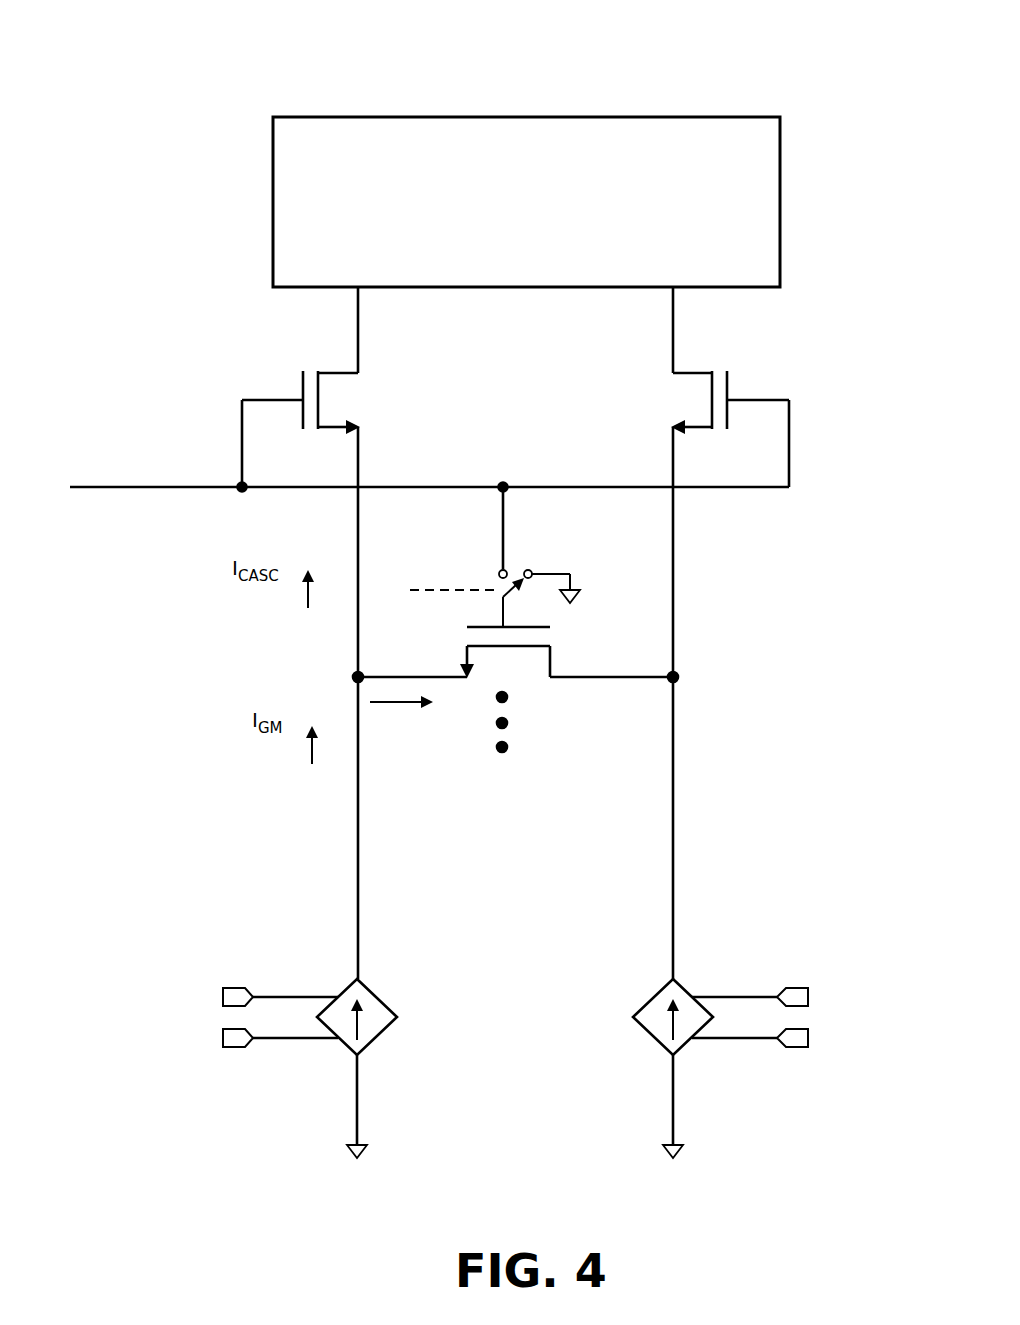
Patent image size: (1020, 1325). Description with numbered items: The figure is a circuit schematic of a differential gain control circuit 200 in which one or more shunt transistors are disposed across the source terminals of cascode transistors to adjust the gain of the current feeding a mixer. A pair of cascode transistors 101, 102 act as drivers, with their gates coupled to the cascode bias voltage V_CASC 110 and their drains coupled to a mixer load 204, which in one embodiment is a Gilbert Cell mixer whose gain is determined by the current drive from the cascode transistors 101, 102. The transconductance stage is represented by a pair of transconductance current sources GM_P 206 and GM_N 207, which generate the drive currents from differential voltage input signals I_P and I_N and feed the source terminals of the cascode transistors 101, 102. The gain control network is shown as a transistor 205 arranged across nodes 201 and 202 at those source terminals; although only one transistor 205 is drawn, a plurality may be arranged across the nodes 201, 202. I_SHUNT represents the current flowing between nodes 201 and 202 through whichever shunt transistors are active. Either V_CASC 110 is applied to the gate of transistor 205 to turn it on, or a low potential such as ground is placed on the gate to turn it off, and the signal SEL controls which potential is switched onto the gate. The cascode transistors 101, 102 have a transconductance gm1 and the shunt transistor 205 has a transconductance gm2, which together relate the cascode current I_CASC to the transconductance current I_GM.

The circuit 200 is at (824, 63).
The mixer load 204 is at (780, 164).
The cascode transistor 101 is at (385, 396).
The cascode transistor 102 is at (683, 396).
The cascode bias voltage 110 is at (74, 487).
The node 201 is at (353, 676).
The node 202 is at (678, 674).
The transistor 205 is at (520, 678).
The transconductance current source GM_P 206 is at (373, 990).
The transconductance current source GM_N 207 is at (680, 986).